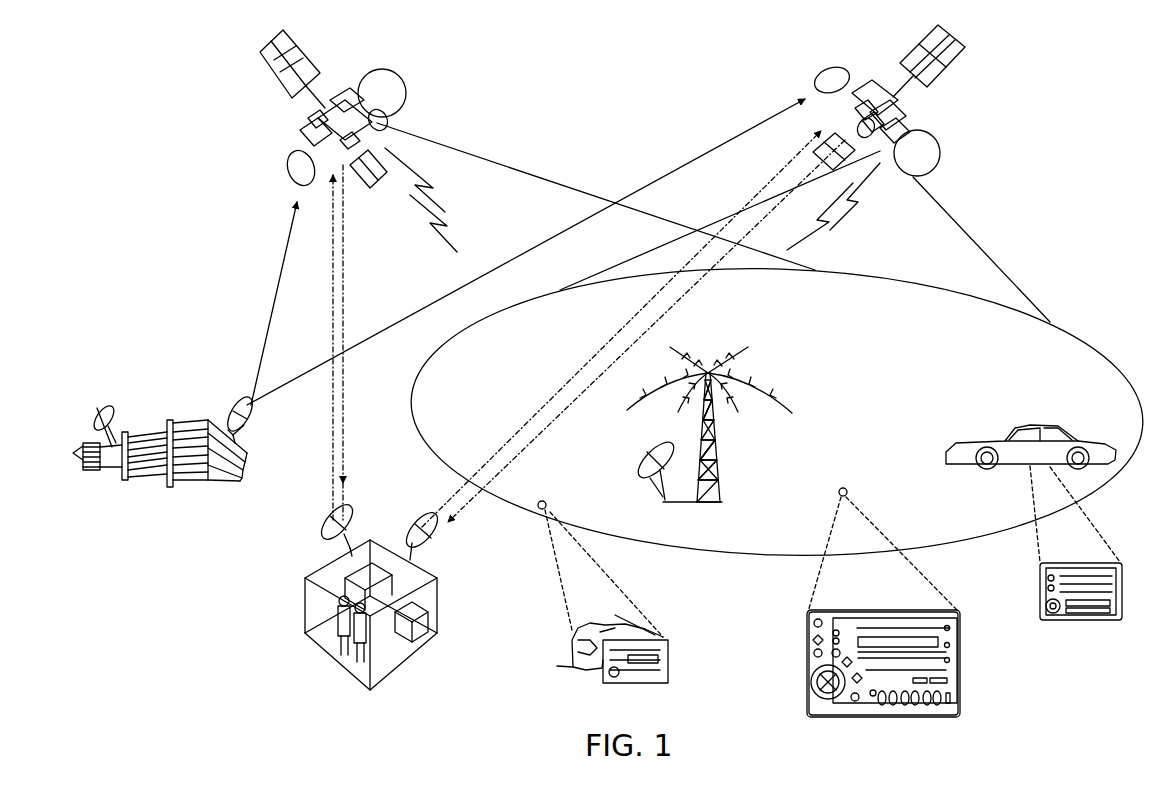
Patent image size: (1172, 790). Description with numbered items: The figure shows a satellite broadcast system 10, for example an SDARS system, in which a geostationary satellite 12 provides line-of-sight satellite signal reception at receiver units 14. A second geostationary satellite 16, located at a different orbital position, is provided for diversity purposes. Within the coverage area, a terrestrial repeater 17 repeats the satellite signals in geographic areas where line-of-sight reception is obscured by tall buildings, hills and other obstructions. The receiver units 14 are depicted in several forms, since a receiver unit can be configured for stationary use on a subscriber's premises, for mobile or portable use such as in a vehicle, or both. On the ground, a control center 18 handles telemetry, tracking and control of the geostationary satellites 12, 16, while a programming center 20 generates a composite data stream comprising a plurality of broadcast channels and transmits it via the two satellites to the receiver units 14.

The satellite broadcast system 10 is at (1054, 170).
The geostationary satellite 12 is at (405, 90).
The receiver units 14 is at (1008, 437).
The geostationary satellite 16 is at (940, 150).
The terrestrial repeater 17 is at (716, 466).
The control center 18 is at (438, 608).
The programming center 20 is at (247, 465).